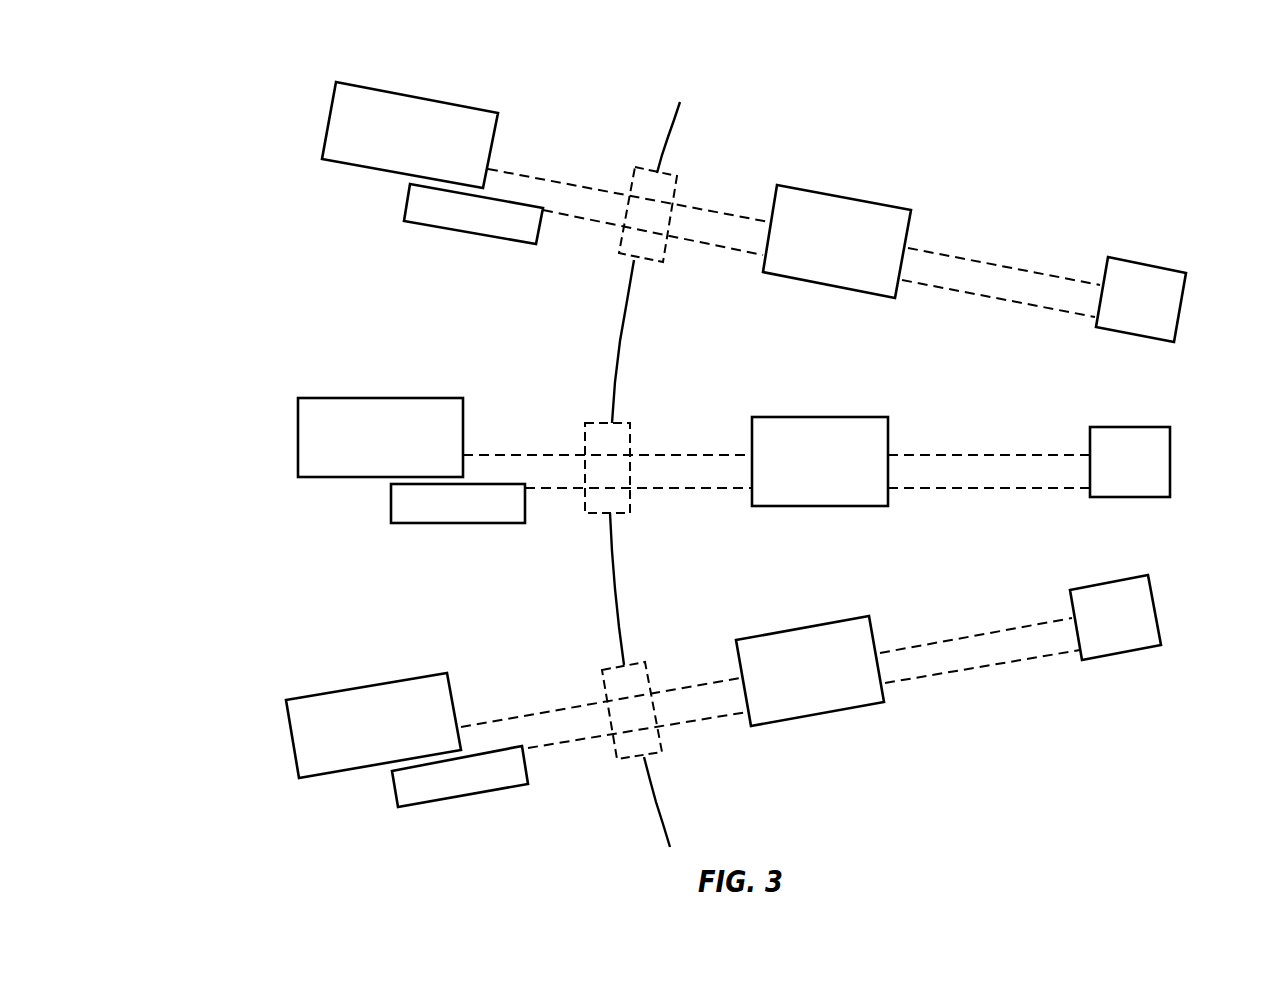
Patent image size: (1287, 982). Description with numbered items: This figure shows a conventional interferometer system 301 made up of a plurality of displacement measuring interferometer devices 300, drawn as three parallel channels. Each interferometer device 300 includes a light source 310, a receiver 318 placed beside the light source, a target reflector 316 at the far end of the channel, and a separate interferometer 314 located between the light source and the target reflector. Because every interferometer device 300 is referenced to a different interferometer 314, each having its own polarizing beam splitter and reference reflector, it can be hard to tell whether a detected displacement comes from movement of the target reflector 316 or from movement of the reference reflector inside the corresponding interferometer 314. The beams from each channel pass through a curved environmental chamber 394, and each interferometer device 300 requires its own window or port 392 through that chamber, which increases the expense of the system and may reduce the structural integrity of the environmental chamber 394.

The interferometer device 300 is at (285, 139).
The interferometer system 301 is at (790, 100).
The light source 310 is at (412, 98).
The interferometer 314 is at (863, 198).
The target reflector 316 is at (1180, 313).
The receiver 318 is at (512, 243).
The window or port 392 is at (677, 176).
The environmental chamber 394 is at (672, 125).